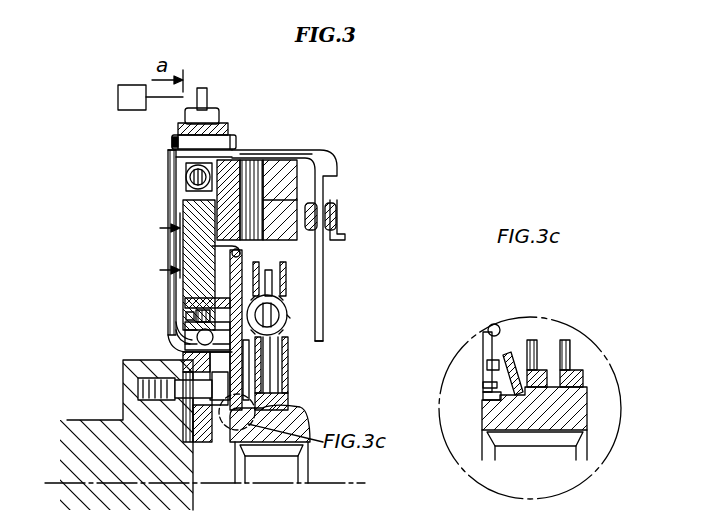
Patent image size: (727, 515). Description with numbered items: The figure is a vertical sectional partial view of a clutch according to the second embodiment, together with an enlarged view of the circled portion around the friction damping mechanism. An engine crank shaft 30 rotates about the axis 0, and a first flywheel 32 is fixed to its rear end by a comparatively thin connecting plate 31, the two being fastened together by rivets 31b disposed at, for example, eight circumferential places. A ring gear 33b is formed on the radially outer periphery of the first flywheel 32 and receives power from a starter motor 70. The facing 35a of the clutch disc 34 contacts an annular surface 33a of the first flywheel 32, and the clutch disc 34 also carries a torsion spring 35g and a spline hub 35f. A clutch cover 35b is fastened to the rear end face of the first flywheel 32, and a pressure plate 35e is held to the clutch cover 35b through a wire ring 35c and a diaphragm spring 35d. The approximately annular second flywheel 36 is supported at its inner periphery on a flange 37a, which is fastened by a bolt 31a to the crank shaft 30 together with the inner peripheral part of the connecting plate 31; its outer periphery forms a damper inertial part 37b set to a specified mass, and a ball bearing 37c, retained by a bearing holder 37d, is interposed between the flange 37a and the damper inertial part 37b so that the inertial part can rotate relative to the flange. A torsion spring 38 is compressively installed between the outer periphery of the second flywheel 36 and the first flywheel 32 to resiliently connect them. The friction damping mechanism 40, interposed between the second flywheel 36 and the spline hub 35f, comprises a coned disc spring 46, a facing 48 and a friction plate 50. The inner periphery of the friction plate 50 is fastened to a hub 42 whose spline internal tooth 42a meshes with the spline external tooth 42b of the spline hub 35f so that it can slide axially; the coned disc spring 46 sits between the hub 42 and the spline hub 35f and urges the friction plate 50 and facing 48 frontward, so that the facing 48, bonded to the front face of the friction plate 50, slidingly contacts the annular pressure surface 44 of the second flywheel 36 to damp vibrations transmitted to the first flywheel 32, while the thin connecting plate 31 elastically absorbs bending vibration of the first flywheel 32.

In FIG. 3, the starter motor 70 is at (118, 100).
In FIG. 3, the ring gear 33b is at (208, 112).
In FIG. 3, the first flywheel 32 is at (242, 142).
In FIG. 3, the rivets 31b is at (172, 142).
In FIG. 3, the annular surface 33a is at (262, 165).
In FIG. 3, the pressure plate 35e is at (318, 150).
In FIG. 3, the clutch cover 35b is at (340, 165).
In FIG. 3, the facing 35a is at (302, 205).
In FIG. 3, the wire ring 35c is at (333, 212).
In FIG. 3, the diaphragm spring 35d is at (324, 318).
In FIG. 3, the torsion spring 35g is at (290, 322).
In FIG. 3, the spline hub 35f is at (300, 424).
In FIG. 3C, the spline hub 35f is at (572, 410).
In FIG. 3, the facing 48 is at (248, 265).
In FIG. 3, the friction damping mechanism 40 is at (298, 276).
In FIG. 3, the clutch disc 34 is at (291, 289).
In FIG. 3, the second flywheel 36 is at (228, 268).
In FIG. 3, the pressure surface 44 is at (216, 262).
In FIG. 3, the torsion spring 38 is at (187, 180).
In FIG. 3, the connecting plate 31 is at (196, 270).
In FIG. 3, the flange 37a is at (205, 352).
In FIG. 3, the damper inertial part 37b is at (188, 300).
In FIG. 3, the ball bearing 37c is at (196, 338).
In FIG. 3, the bearing holder 37d is at (175, 325).
In FIG. 3, the bolt 31a is at (138, 390).
In FIG. 3, the engine crank shaft 30 is at (123, 412).
In FIG. 3, the axis 0 is at (205, 485).
In FIG. 3, the friction plate 50 is at (258, 377).
In FIG. 3C, the friction plate 50 is at (490, 334).
In FIG. 3C, the coned disc spring 46 is at (520, 355).
In FIG. 3C, the hub 42 is at (488, 385).
In FIG. 3C, the spline internal tooth 42a is at (488, 408).
In FIG. 3C, the spline external tooth 42b is at (487, 383).